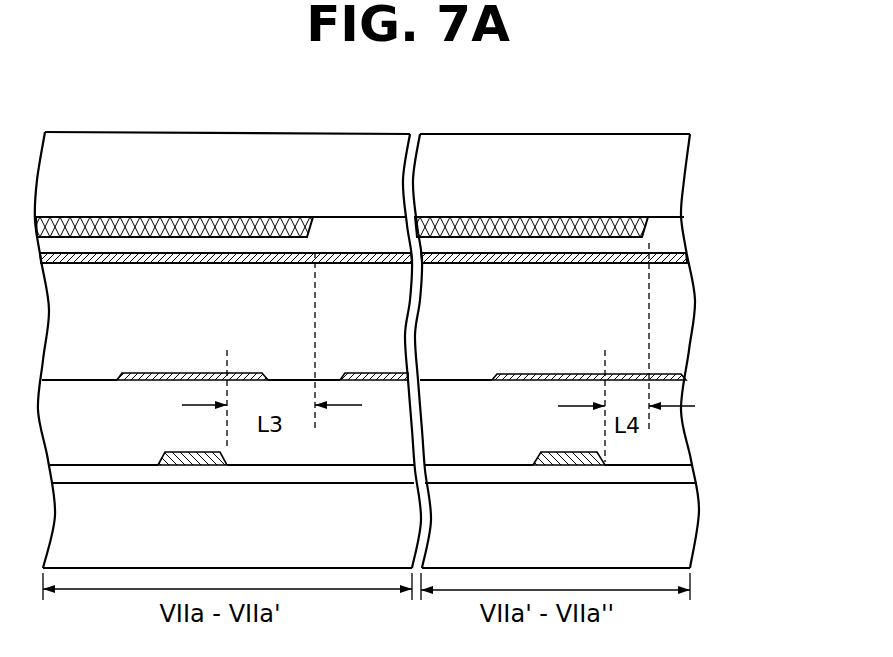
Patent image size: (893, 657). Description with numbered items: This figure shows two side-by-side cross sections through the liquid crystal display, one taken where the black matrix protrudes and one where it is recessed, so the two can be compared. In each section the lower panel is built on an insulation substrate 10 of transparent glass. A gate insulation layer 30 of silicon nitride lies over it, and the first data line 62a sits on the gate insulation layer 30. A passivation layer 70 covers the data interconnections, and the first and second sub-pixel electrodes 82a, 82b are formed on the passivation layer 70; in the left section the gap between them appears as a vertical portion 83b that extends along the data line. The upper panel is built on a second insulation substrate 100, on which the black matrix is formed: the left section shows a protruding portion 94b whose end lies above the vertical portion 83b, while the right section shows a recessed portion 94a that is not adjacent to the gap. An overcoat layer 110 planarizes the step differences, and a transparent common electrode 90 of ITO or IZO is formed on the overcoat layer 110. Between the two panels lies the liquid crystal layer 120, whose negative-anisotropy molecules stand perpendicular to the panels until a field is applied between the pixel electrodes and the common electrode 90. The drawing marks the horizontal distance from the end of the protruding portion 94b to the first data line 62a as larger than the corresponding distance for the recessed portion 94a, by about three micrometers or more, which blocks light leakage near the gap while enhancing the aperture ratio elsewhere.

The insulation substrate 10 is at (678, 527).
The gate insulation layer 30 is at (677, 478).
The first data line 62a is at (190, 466).
The passivation layer 70 is at (668, 432).
The first sub-pixel electrode 82a is at (361, 373).
The second sub-pixel electrode 82b is at (193, 373).
The vertical portion 83b is at (287, 368).
The common electrode 90 is at (155, 262).
The recessed portion 94a is at (486, 222).
The protruding portion 94b is at (233, 222).
The insulation substrate 100 is at (328, 148).
The overcoat layer 110 is at (667, 237).
The liquid crystal layer 120 is at (682, 310).